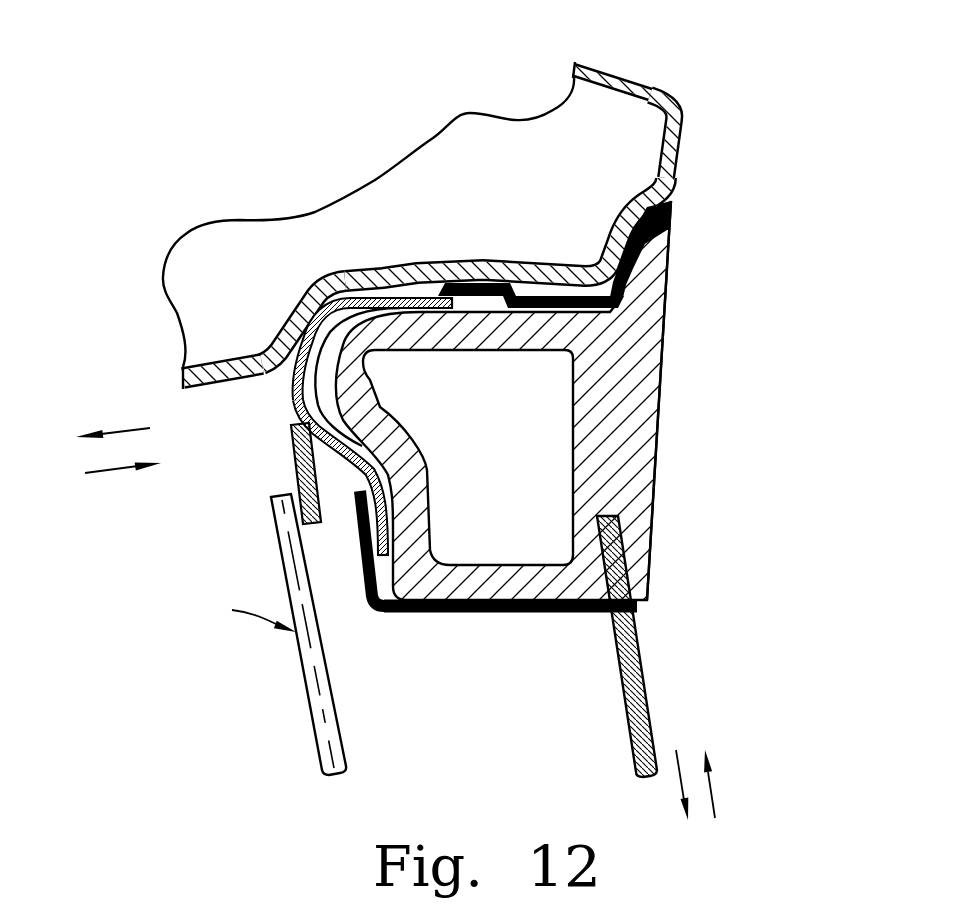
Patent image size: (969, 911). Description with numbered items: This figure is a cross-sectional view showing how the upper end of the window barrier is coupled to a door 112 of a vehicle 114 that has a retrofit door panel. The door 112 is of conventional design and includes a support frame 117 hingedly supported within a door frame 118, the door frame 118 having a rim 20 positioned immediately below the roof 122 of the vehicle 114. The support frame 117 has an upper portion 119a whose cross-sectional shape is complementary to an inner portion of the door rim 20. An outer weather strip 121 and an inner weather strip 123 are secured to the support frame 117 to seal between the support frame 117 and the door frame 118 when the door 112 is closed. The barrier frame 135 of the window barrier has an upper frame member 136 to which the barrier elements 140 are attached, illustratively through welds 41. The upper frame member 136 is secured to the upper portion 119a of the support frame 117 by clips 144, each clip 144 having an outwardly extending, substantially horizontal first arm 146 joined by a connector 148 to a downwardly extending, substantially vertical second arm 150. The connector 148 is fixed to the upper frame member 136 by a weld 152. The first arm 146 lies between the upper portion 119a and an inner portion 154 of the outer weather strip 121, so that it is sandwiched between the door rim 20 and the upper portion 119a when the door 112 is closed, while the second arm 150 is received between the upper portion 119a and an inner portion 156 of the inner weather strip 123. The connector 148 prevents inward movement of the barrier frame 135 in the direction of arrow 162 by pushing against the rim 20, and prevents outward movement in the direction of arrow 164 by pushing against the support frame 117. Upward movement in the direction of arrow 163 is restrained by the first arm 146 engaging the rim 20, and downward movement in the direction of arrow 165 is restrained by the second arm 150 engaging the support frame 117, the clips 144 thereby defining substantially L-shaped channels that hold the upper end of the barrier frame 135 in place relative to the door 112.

The vehicle 114 is at (491, 220).
The roof 122 is at (598, 74).
The door frame 118 is at (678, 152).
The rim 20 is at (303, 305).
The connector 148 is at (293, 355).
The clip 144 is at (302, 386).
The door 112 is at (502, 428).
The support frame 117 is at (665, 399).
The upper portion 119a is at (658, 490).
The outer weather strip 121 is at (672, 214).
The inner portion 154 is at (485, 283).
The first arm 146 is at (398, 301).
The weld 152 is at (300, 418).
The second arm 150 is at (390, 441).
The inner portion 156 is at (364, 547).
The inner weather strip 123 is at (459, 614).
The upper frame member 136 is at (297, 441).
The weld 41 is at (293, 488).
The pins 140 is at (473, 632).
The barrier frame 135 is at (240, 608).
The arrow 162 is at (123, 431).
The arrow 164 is at (112, 476).
The arrow 163 is at (681, 790).
The arrow 165 is at (719, 793).